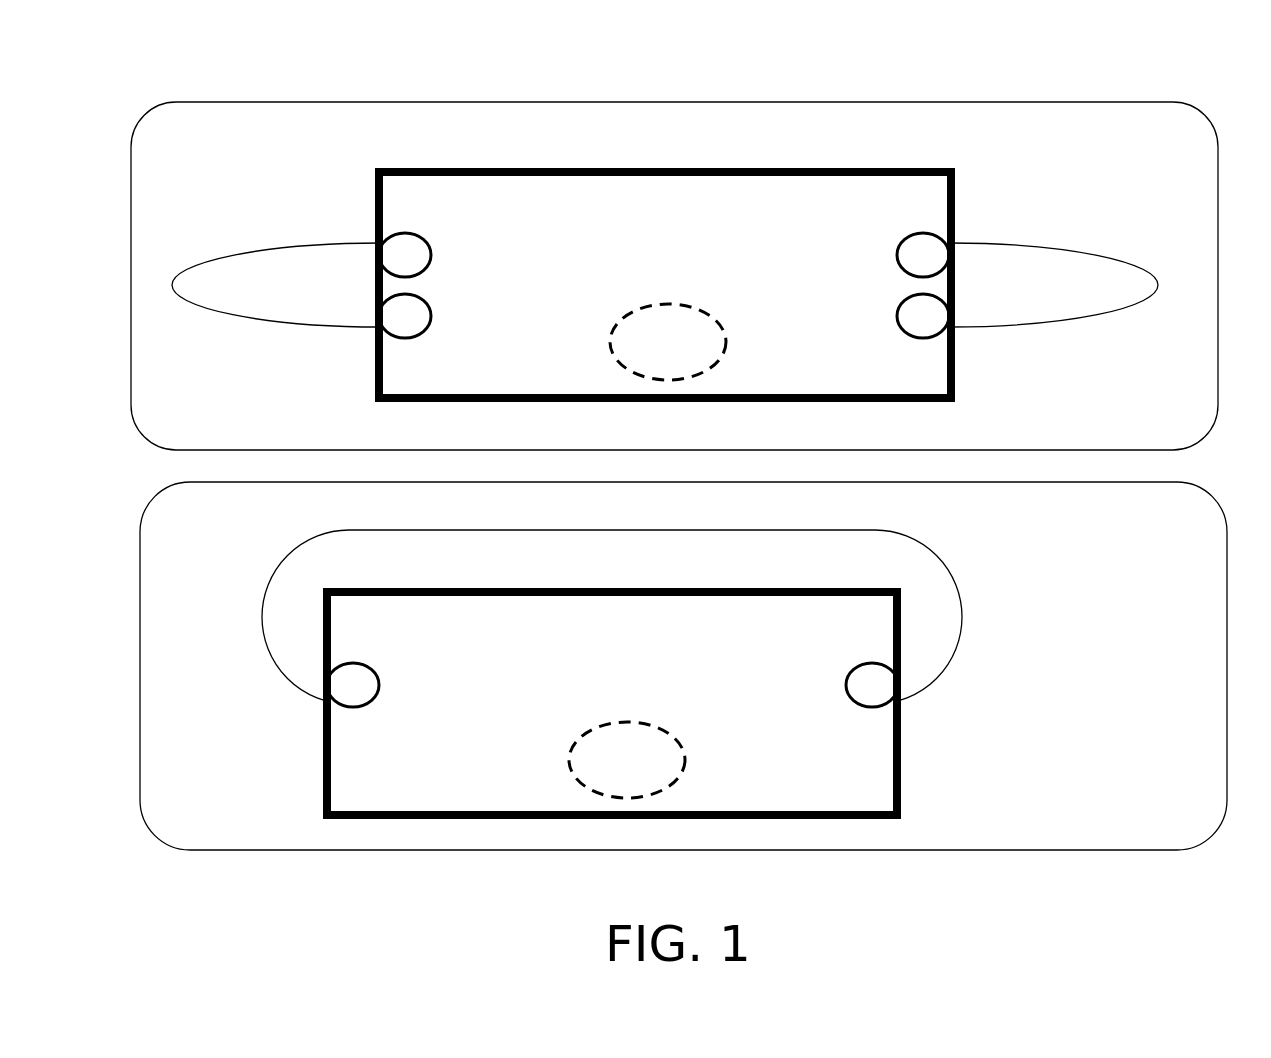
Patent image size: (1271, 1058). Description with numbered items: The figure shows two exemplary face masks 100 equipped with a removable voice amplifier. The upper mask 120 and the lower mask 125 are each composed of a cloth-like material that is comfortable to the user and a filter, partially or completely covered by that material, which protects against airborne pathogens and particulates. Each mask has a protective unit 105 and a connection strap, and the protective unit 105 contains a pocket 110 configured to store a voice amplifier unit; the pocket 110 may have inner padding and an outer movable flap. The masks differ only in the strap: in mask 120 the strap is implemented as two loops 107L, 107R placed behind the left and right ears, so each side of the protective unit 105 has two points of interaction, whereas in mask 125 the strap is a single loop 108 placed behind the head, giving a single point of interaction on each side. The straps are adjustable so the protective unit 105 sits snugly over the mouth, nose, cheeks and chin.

The system 100 is at (156, 69).
The protective unit 105 is at (935, 368).
The left loop 107L is at (328, 258).
The right loop 107R is at (1022, 316).
The single loop 108 is at (940, 573).
The pocket 110 is at (665, 327).
The mask 120 is at (674, 276).
The mask 125 is at (683, 666).